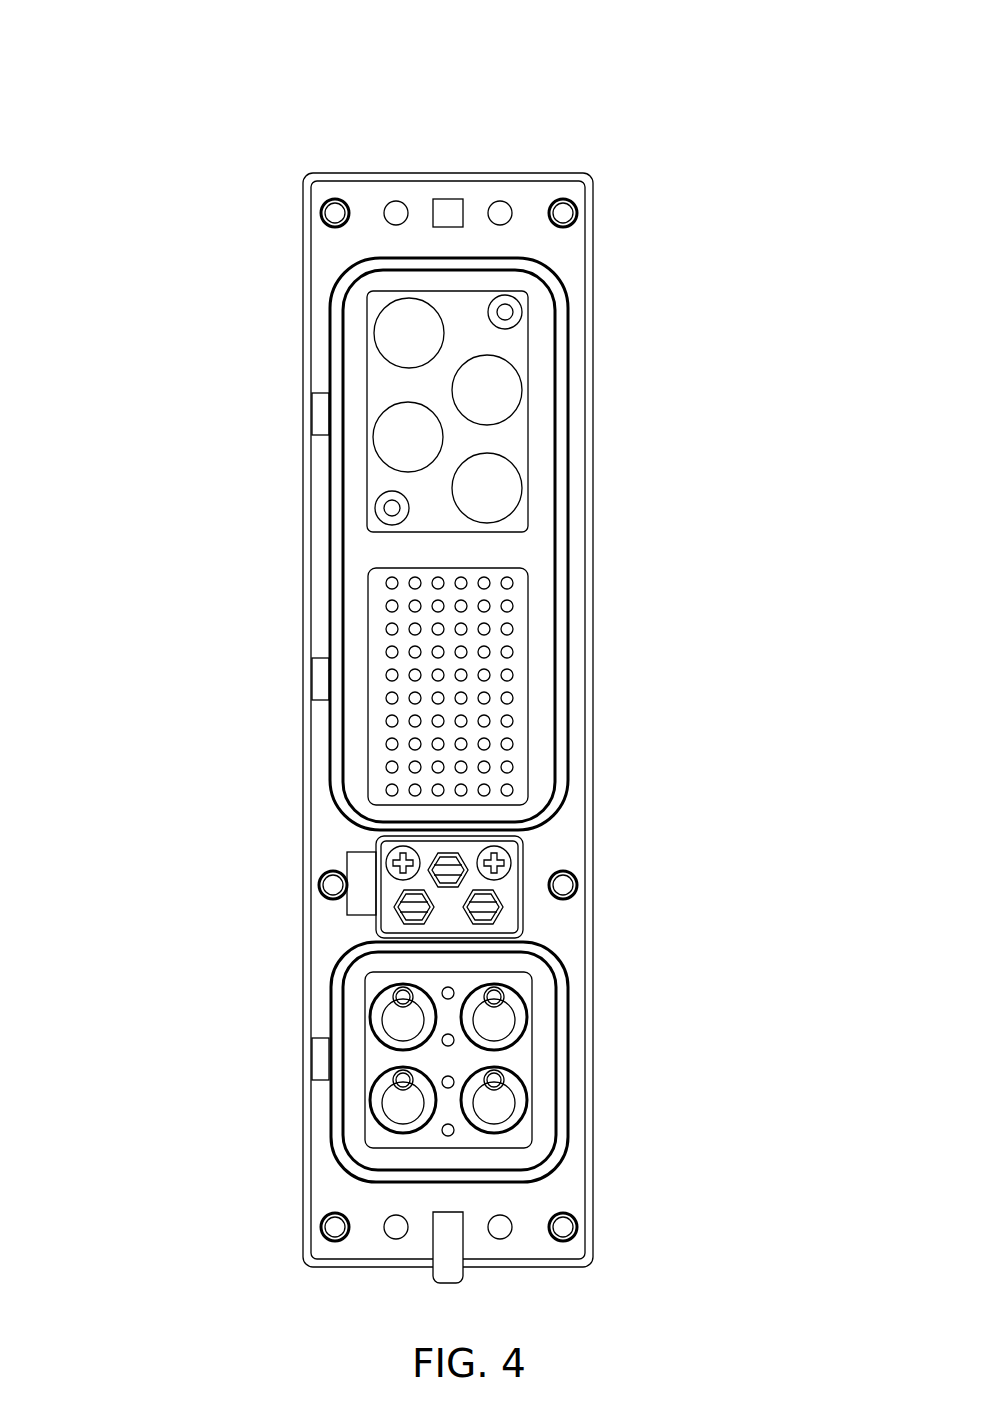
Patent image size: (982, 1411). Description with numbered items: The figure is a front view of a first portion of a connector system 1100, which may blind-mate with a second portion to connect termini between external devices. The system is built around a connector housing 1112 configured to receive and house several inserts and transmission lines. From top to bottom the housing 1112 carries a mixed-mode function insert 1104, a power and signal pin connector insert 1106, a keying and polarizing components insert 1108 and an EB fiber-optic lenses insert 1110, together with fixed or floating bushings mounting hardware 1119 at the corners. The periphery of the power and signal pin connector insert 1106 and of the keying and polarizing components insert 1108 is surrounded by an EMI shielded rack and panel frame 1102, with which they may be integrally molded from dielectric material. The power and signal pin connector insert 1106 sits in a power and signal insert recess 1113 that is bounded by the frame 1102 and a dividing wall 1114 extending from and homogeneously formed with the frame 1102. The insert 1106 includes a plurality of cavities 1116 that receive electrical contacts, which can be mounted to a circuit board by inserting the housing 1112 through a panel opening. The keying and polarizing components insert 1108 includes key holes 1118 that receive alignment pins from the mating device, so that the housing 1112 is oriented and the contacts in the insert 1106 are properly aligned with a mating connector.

The connector system 1100 is at (187, 50).
The EMI shielded rack and panel frame 1102 is at (448, 213).
The mixed-mode function insert 1104 is at (457, 387).
The power and signal pin connector insert 1106 is at (457, 685).
The keying and polarizing components insert 1108 is at (447, 901).
The EB fiber-optic lenses insert 1110 is at (459, 1022).
The connector housing 1112 is at (595, 1187).
The power and signal insert recess 1113 is at (522, 575).
The dividing wall 1114 is at (527, 830).
The cavities 1116 is at (387, 629).
The key holes 1118 is at (397, 910).
The fixed or floating bushings mounting hardware 1119 is at (568, 1228).